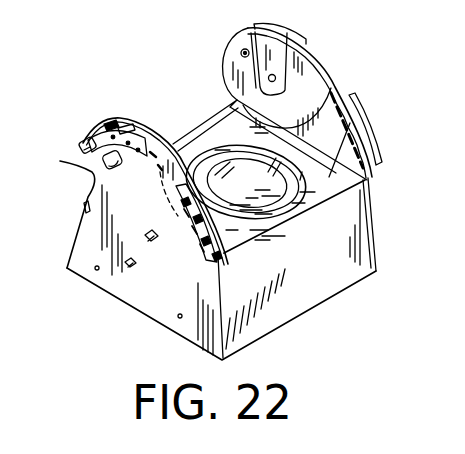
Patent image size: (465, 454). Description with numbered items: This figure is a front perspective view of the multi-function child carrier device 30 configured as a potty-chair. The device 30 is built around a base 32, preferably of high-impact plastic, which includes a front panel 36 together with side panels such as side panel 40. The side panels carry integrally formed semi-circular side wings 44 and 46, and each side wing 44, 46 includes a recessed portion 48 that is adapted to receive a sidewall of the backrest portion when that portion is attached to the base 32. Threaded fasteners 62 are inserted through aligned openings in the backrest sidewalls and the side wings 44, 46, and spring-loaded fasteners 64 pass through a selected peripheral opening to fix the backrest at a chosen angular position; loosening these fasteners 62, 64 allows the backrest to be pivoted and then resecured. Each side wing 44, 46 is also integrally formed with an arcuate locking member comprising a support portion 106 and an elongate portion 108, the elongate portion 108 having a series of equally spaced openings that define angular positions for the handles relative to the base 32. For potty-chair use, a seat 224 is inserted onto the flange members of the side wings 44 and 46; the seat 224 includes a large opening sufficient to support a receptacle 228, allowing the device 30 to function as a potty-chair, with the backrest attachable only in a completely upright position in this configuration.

The multi-function child carrier device 30 is at (226, 191).
The base 32 is at (240, 200).
The front panel 36 is at (333, 256).
The side panel 40 is at (150, 292).
The side wing 44 is at (153, 193).
The side wing 46 is at (332, 64).
The recessed portion 48 is at (308, 108).
The threaded fastener 62 is at (75, 164).
The spring-loaded fastener 64 is at (82, 142).
The support portion 106 is at (112, 123).
The elongate portion 108 is at (128, 122).
The seat 224 is at (329, 177).
The receptacle 228 is at (213, 165).